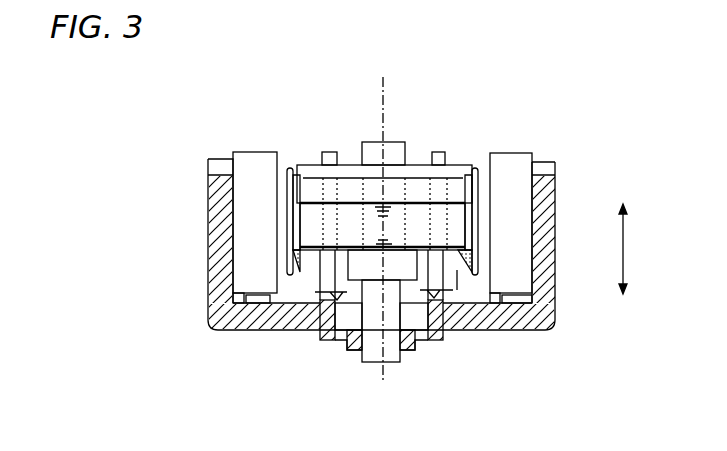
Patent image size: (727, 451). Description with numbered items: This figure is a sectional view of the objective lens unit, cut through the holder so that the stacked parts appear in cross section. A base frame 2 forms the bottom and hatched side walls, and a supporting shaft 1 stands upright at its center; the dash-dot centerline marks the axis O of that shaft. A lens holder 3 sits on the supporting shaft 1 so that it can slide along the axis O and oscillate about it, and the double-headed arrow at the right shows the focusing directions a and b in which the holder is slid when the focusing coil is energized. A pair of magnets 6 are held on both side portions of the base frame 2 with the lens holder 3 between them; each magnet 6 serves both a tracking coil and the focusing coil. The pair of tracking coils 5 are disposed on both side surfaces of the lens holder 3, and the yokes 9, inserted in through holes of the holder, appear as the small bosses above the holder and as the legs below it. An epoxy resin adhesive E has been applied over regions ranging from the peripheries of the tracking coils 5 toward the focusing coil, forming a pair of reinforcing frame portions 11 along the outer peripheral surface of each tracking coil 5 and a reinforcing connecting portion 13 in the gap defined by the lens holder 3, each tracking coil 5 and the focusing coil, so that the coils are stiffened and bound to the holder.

The supporting shaft 1 is at (370, 148).
The base frame 2 is at (233, 318).
The lens holder 3 is at (460, 167).
The tracking coils 5 is at (292, 222).
The magnets 6 is at (257, 157).
The yokes 9 is at (329, 152).
The reinforcing frame portions 11 is at (290, 167).
The reinforcing connecting portion 13 is at (300, 272).
The axis O is at (383, 90).
The epoxy resin adhesive E is at (457, 272).
The focusing direction a is at (630, 244).
The focusing direction b is at (630, 289).